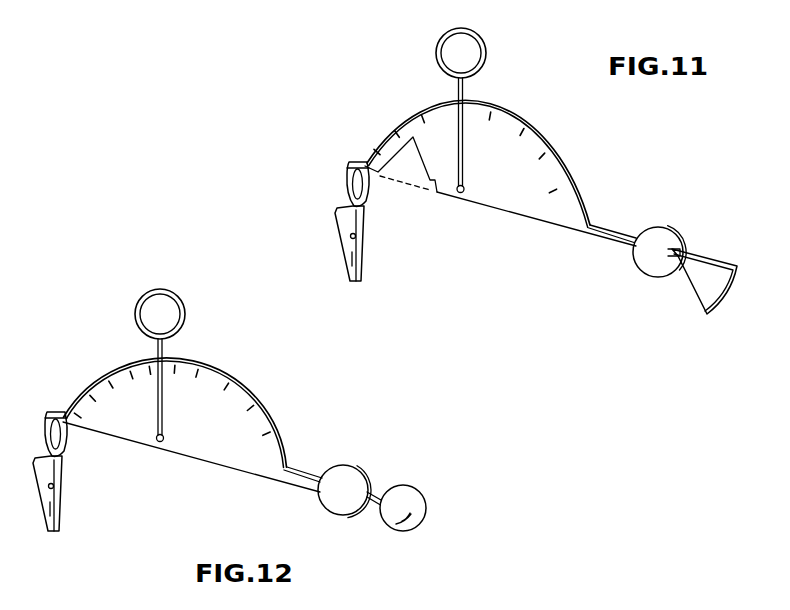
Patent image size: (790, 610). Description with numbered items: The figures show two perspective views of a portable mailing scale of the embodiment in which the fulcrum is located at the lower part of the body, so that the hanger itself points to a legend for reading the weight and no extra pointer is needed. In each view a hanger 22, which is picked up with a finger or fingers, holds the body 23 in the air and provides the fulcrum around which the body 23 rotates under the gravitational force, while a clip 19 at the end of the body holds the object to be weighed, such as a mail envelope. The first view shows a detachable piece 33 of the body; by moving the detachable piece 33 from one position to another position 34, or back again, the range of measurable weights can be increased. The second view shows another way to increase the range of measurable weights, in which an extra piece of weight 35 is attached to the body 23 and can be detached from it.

In FIG. 11, the clip 19 is at (334, 262).
In FIG. 12, the clip 19 is at (42, 523).
In FIG. 11, the hanger 22 is at (492, 50).
In FIG. 12, the hanger 22 is at (187, 305).
In FIG. 11, the body 23 is at (595, 195).
In FIG. 12, the body 23 is at (270, 408).
In FIG. 11, the detachable piece 33 is at (402, 192).
In FIG. 11, the another position 34 is at (688, 307).
In FIG. 12, the extra piece of weight 35 is at (425, 485).